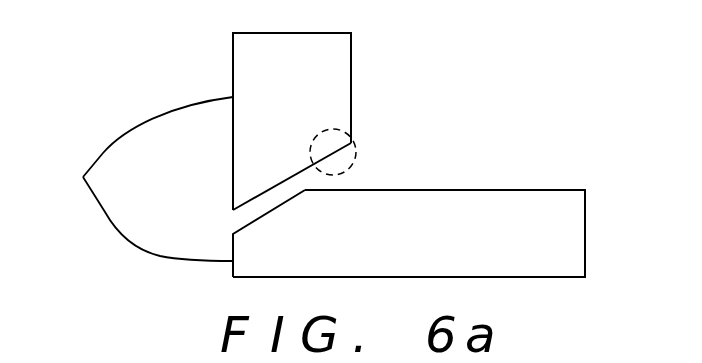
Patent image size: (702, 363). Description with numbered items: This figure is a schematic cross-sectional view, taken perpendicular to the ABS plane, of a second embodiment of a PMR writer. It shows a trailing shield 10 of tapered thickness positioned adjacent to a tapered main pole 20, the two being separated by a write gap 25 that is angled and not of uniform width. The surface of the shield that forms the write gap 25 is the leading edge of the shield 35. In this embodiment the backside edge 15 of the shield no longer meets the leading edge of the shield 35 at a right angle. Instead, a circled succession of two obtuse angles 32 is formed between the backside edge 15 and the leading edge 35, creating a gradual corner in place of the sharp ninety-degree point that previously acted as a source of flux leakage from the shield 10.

The trailing shield 10 is at (330, 61).
The backside edge 15 is at (351, 100).
The tapered main pole 20 is at (567, 228).
The write gap 25 is at (239, 214).
The succession of two obtuse angles 32 is at (358, 147).
The leading edge of the shield 35 is at (317, 165).
The air bearing surface ABS is at (134, 179).